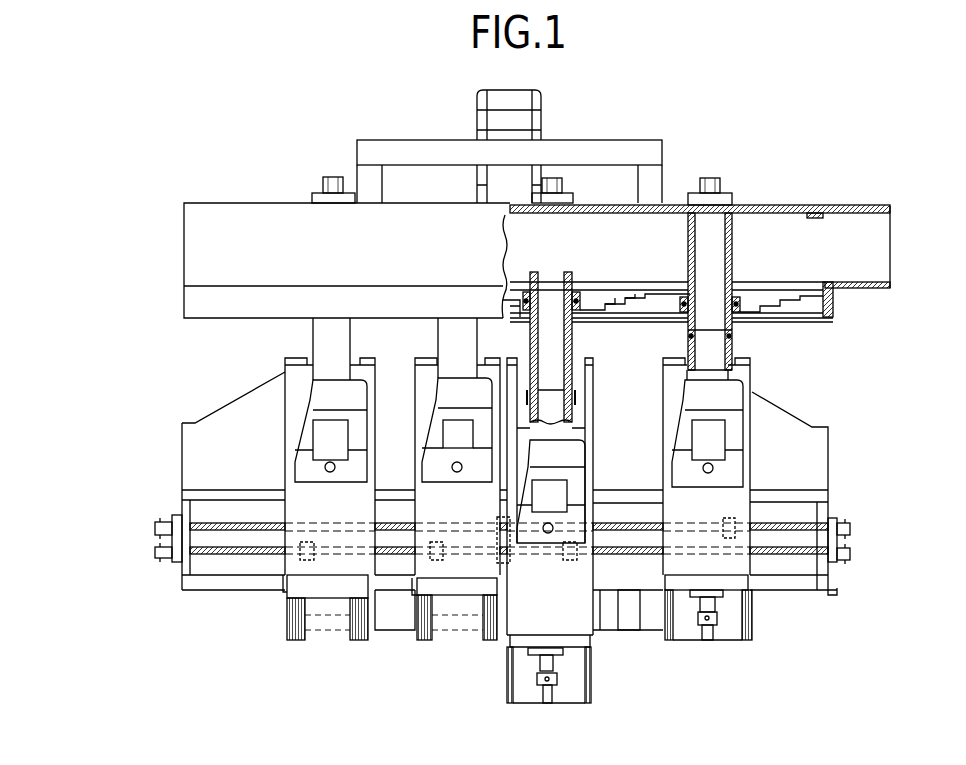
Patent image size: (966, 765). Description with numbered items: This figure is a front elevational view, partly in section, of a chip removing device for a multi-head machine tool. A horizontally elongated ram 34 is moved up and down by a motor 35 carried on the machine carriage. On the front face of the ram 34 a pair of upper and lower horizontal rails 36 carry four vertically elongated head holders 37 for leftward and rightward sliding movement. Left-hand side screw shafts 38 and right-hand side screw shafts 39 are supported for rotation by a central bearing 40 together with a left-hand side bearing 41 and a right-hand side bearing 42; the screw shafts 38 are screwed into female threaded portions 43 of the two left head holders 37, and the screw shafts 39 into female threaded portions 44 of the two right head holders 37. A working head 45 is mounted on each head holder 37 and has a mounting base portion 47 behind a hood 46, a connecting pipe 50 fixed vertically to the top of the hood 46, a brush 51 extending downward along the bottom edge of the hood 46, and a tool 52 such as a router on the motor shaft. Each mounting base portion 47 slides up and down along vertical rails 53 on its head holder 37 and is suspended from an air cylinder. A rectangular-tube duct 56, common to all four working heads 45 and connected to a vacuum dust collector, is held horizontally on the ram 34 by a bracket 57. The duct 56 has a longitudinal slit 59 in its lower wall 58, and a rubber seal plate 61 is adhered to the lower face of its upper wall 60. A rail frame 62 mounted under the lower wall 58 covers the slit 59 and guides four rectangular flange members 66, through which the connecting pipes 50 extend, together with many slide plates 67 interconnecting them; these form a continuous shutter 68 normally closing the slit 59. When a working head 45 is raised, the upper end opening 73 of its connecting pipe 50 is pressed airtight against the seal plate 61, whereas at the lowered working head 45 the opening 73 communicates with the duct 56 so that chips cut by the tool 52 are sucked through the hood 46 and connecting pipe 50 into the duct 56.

The ram 34 is at (210, 437).
The motor 35 is at (512, 100).
The horizontal rails 36 is at (248, 494).
The head holders 37 is at (303, 357).
The left-hand side screw shafts 38 is at (250, 620).
The right-hand side screw shafts 39 is at (805, 562).
The central bearing 40 is at (465, 568).
The left-hand side bearing 41 is at (170, 566).
The right-hand side bearing 42 is at (840, 543).
The female threaded portions 43 is at (273, 600).
The female threaded portions 44 is at (752, 492).
The working head 45 is at (280, 513).
The hood 46 is at (275, 600).
The mounting base portion 47 is at (293, 422).
The connecting pipe 50 is at (732, 245).
The brush 51 is at (762, 670).
The tool 52 is at (549, 702).
The vertical rails 53 is at (582, 380).
The duct 56 is at (247, 223).
The bracket 57 is at (622, 148).
The lower wall 58 is at (867, 290).
The slit 59 is at (787, 283).
The upper wall 60 is at (872, 207).
The seal plate 61 is at (805, 230).
The rail frame 62 is at (837, 305).
The flange members 66 is at (586, 295).
The slide plates 67 is at (635, 300).
The shutter 68 is at (797, 290).
The upper end opening 73 is at (722, 214).